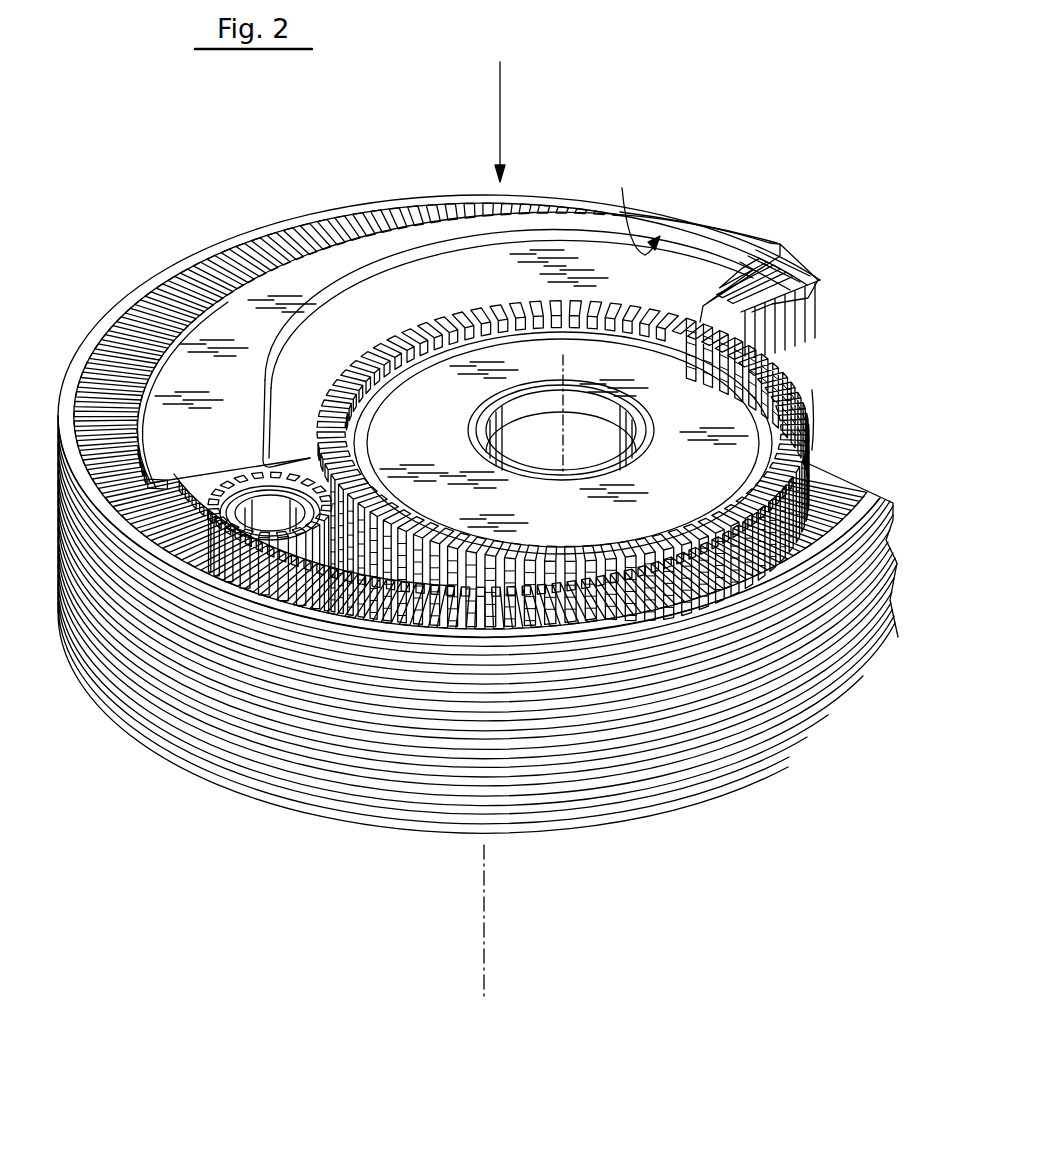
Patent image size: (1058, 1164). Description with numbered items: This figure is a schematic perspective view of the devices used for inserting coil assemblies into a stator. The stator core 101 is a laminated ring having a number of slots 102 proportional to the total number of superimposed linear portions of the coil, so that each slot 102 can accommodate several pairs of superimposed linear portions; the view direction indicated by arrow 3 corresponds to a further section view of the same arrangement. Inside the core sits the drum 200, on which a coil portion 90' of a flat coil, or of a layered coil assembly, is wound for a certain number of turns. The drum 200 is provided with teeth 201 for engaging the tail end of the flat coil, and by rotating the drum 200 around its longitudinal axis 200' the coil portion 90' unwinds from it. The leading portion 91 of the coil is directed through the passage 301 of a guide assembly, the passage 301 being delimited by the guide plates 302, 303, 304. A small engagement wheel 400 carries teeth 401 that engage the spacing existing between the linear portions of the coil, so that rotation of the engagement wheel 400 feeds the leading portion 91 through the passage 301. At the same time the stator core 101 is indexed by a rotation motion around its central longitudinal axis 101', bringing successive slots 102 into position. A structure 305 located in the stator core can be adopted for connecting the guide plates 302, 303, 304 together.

The section line 3 is at (500, 98).
The stator core 101 is at (478, 522).
The longitudinal axis 101' is at (433, 922).
The slots 102 is at (247, 243).
The drum 200 is at (624, 420).
The longitudinal axis of the drum 200' is at (561, 417).
The teeth 201 is at (330, 465).
The passage 301 is at (333, 245).
The guide plate 302 is at (193, 375).
The guide plate 303 is at (445, 272).
The guide plate 304 is at (705, 235).
The structure 305 is at (190, 480).
The engagement wheel 400 is at (270, 510).
The teeth 401 is at (313, 552).
The coil portion 90' is at (874, 394).
The leading portion 91 is at (634, 211).